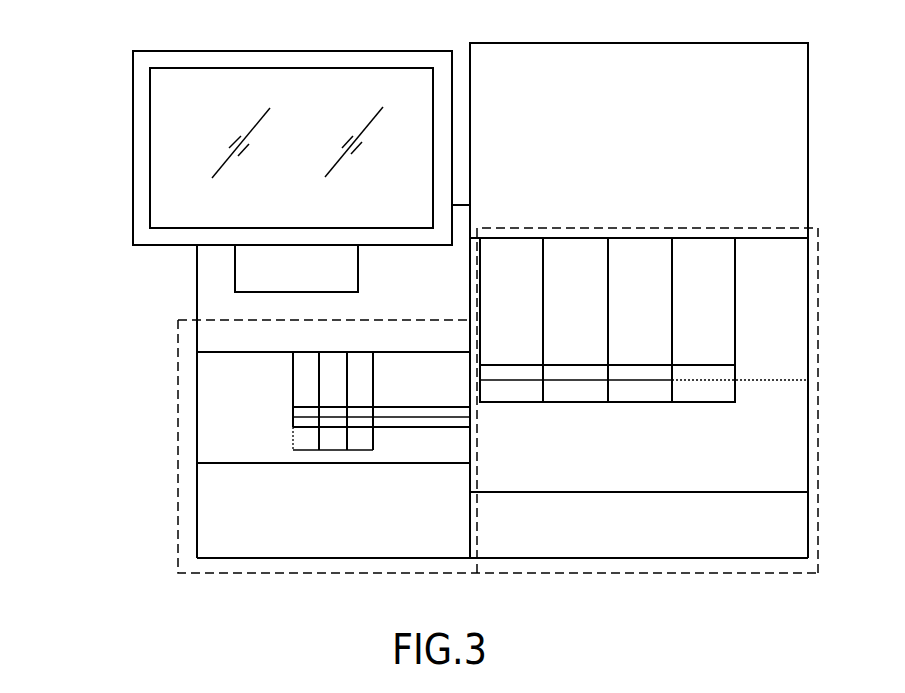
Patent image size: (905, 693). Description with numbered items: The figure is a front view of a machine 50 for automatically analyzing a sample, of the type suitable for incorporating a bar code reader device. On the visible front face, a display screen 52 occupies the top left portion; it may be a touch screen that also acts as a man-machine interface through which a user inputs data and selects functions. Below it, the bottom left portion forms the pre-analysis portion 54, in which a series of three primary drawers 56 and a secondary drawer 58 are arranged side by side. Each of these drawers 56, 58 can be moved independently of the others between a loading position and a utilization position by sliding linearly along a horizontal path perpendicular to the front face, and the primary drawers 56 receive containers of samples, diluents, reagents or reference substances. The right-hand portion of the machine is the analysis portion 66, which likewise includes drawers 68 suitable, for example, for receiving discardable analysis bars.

The machine 50 is at (425, 300).
The display screen 52 is at (303, 161).
The pre-analysis portion 54 is at (178, 446).
The primary drawers 56 is at (357, 393).
The secondary drawer 58 is at (433, 391).
The analysis portion 66 is at (764, 576).
The drawers 68 is at (697, 250).